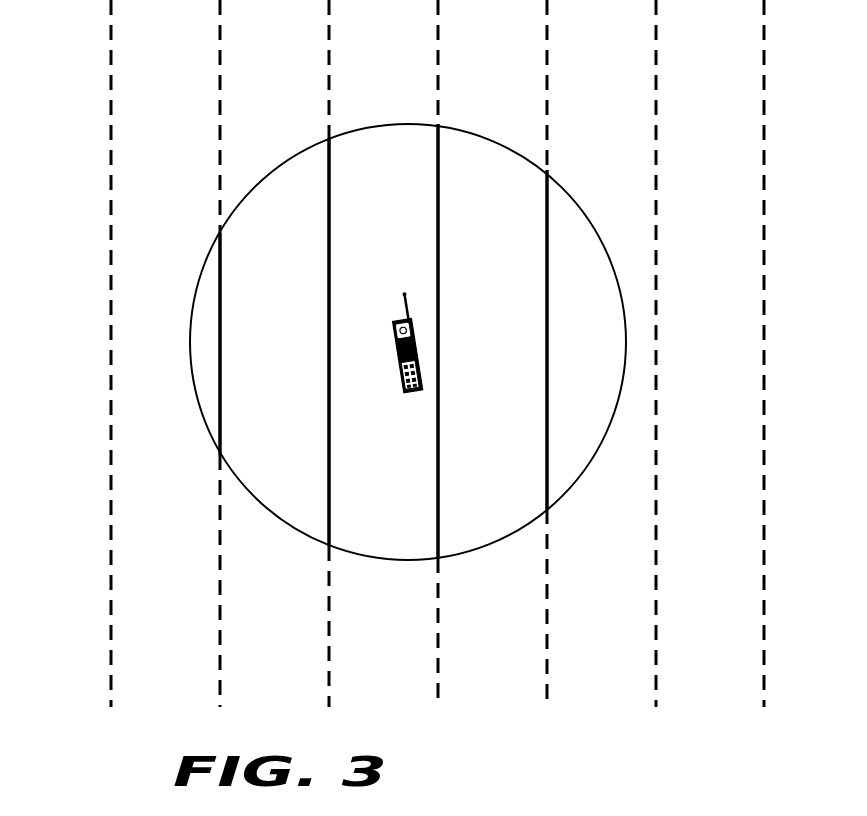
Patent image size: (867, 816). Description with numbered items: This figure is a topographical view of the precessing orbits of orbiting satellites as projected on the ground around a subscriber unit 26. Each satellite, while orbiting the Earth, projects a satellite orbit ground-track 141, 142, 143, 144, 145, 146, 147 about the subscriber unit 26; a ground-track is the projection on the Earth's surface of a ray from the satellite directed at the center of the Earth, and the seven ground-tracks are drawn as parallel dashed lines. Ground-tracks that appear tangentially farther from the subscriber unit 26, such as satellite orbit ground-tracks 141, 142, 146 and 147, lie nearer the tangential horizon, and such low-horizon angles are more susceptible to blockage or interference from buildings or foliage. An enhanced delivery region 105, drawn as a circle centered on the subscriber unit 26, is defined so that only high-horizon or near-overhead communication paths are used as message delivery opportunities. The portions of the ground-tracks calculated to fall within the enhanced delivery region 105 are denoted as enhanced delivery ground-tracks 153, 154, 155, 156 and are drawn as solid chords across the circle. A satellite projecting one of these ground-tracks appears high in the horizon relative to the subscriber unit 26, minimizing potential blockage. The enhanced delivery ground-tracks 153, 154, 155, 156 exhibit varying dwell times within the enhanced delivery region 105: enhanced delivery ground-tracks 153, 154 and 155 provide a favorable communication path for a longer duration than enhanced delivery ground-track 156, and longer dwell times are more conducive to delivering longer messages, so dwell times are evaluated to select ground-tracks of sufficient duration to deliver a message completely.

The subscriber unit 26 is at (406, 316).
The enhanced delivery region 105 is at (492, 543).
The satellite orbit ground-track 141 is at (763, 57).
The satellite orbit ground-track 142 is at (655, 57).
The satellite orbit ground-track 143 is at (546, 60).
The satellite orbit ground-track 144 is at (437, 60).
The satellite orbit ground-track 145 is at (328, 60).
The satellite orbit ground-track 146 is at (219, 60).
The satellite orbit ground-track 147 is at (110, 60).
The enhanced delivery ground-track 153 is at (549, 366).
The enhanced delivery ground-track 154 is at (440, 497).
The enhanced delivery ground-track 155 is at (331, 478).
The enhanced delivery ground-track 156 is at (222, 307).